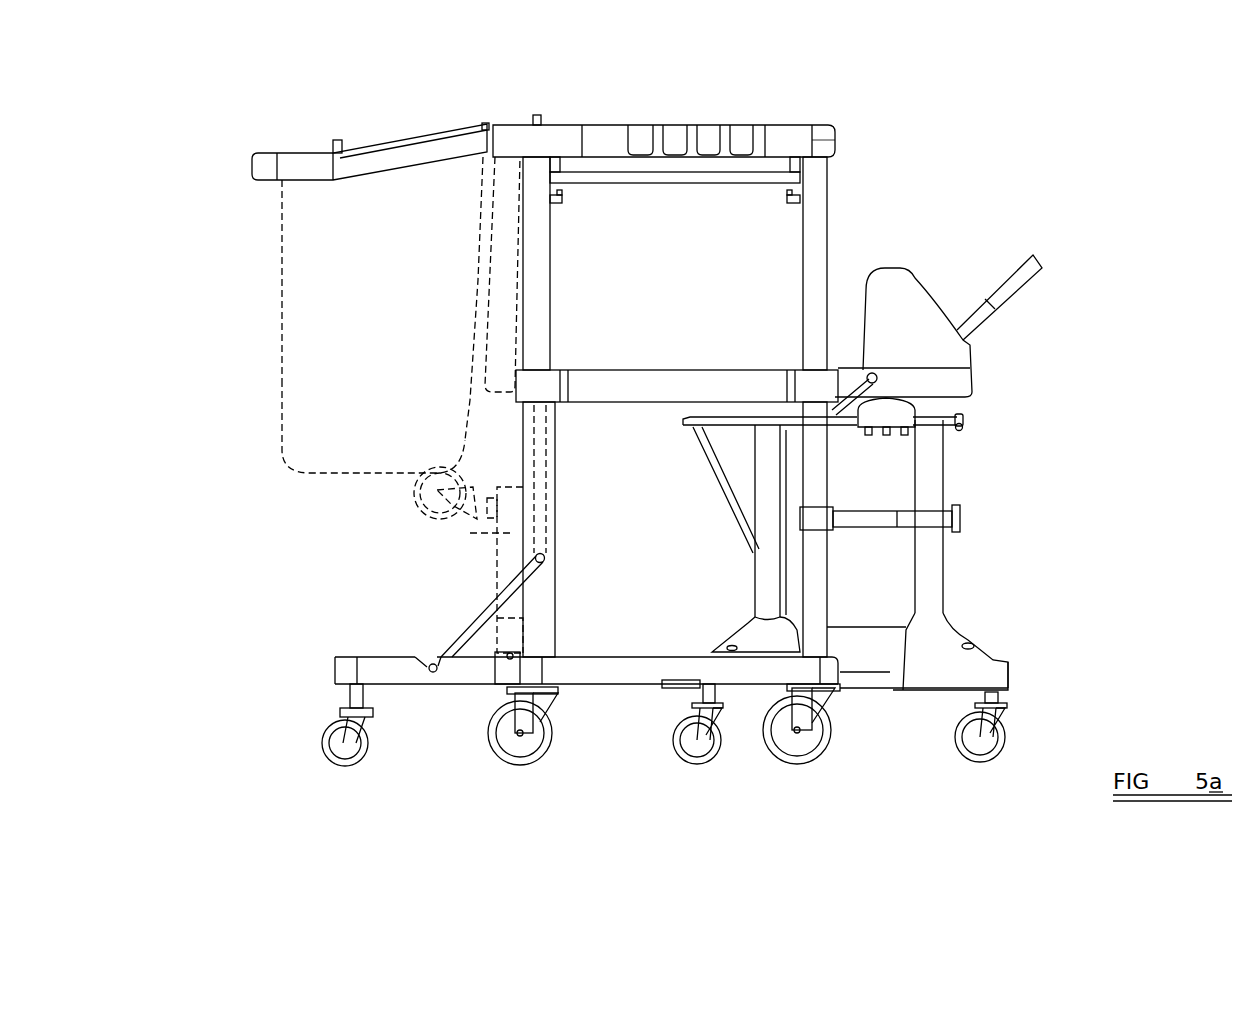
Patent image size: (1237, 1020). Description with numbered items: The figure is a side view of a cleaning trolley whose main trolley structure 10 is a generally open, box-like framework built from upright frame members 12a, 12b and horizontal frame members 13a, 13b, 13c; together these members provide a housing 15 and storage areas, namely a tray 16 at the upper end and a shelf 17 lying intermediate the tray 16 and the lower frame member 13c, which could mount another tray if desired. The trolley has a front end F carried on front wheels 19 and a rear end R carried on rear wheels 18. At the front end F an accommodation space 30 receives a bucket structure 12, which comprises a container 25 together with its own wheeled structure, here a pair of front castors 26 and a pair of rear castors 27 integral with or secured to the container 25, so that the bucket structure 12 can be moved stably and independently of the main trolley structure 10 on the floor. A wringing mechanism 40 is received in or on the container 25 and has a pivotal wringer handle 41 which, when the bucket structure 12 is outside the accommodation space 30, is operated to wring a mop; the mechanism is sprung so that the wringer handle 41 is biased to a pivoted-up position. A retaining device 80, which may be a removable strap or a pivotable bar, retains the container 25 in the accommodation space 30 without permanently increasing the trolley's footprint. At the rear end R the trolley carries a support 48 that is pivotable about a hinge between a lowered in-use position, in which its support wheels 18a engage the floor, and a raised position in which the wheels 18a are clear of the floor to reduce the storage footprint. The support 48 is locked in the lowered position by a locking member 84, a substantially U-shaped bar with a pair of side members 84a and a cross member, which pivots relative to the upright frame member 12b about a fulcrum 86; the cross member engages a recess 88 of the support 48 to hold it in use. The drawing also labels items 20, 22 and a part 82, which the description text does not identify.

The main trolley structure 10 is at (662, 436).
The bucket structure 12 is at (635, 429).
The upright frame member 12a is at (820, 220).
The upright frame member 12b is at (533, 242).
The horizontal frame member 13a is at (792, 132).
The horizontal frame member 13b is at (612, 378).
The horizontal frame member 13c is at (617, 675).
The housing 15 is at (553, 483).
The tray 16 is at (683, 180).
The shelf 17 is at (713, 347).
The rear wheels 18 is at (502, 757).
The support wheels 18a is at (342, 752).
The front wheels 19 is at (825, 743).
The bag 20 is at (298, 160).
The bag bottom 22 is at (298, 399).
The container 25 is at (897, 568).
The front castors 26 is at (1007, 742).
The rear castors 27 is at (707, 740).
The accommodation space 30 is at (750, 557).
The wringing mechanism 40 is at (910, 300).
The wringer handle 41 is at (1020, 280).
The support 48 is at (470, 533).
The retaining device 80 is at (963, 517).
The hinge pin 82 is at (508, 660).
The locking member 84 is at (552, 445).
The side members 84a is at (470, 623).
The fulcrum 86 is at (545, 560).
The recess 88 is at (429, 665).
The rear end R is at (505, 122).
The front end F is at (822, 130).